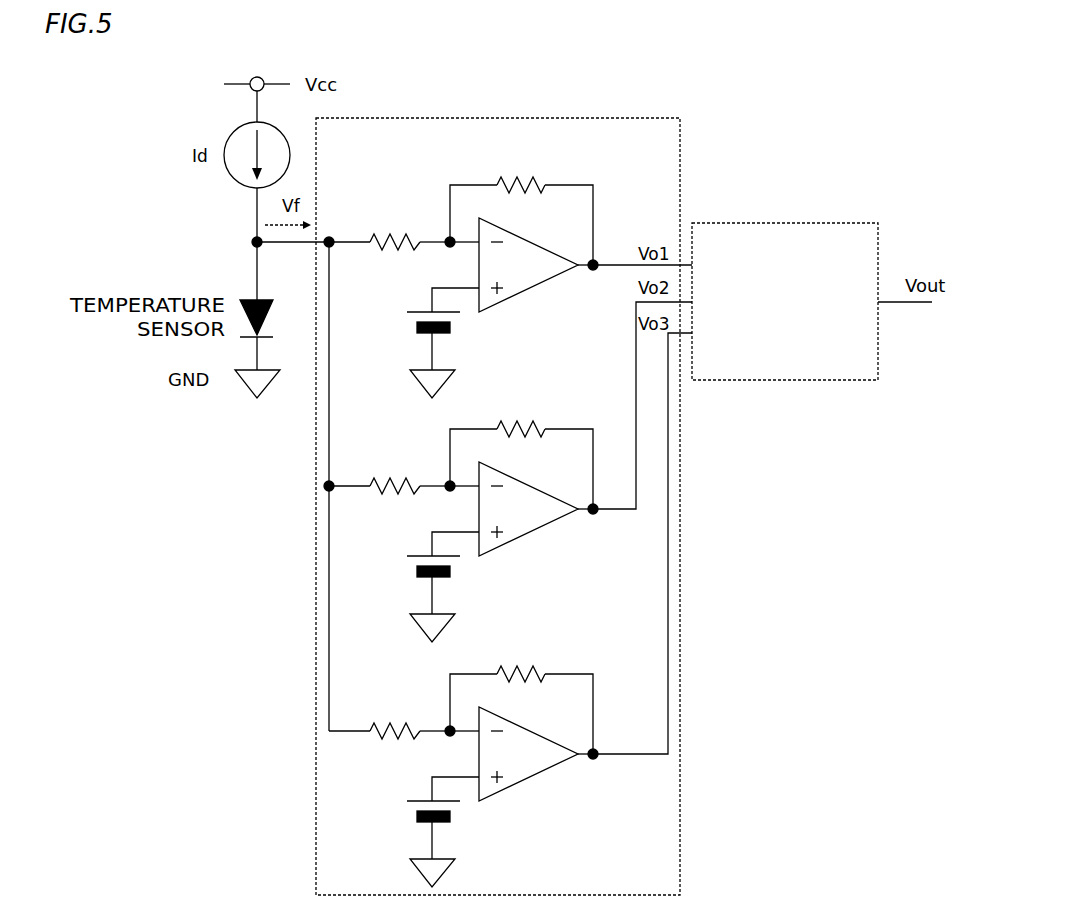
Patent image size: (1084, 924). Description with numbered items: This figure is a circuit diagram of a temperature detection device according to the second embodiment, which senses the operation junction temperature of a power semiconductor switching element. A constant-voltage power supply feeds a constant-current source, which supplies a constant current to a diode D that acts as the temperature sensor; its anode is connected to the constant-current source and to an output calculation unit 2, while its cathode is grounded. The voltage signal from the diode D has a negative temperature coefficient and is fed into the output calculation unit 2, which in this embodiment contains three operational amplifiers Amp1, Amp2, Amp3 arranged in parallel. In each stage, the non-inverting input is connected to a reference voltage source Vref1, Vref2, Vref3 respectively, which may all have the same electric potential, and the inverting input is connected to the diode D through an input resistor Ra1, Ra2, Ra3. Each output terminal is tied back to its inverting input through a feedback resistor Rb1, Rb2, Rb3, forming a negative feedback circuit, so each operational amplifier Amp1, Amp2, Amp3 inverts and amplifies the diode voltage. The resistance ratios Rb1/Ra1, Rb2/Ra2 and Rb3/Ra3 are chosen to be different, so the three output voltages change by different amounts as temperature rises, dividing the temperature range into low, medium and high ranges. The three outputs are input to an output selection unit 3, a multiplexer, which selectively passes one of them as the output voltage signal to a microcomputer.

The output calculation unit 2 is at (557, 118).
The output selection unit 3 is at (765, 223).
The diode D is at (246, 300).
The resistor Ra1 is at (389, 227).
The resistor Ra2 is at (389, 471).
The resistor Ra3 is at (389, 716).
The resistor Rb1 is at (521, 207).
The resistor Rb2 is at (521, 451).
The resistor Rb3 is at (521, 696).
The operational amplifier Amp1 is at (536, 271).
The operational amplifier Amp2 is at (536, 515).
The operational amplifier Amp3 is at (536, 760).
The reference voltage source Vref1 is at (414, 343).
The reference voltage source Vref2 is at (414, 587).
The reference voltage source Vref3 is at (414, 832).